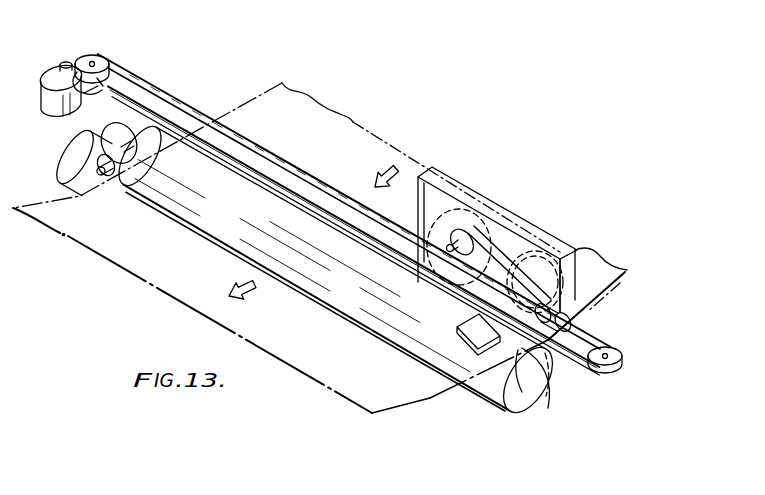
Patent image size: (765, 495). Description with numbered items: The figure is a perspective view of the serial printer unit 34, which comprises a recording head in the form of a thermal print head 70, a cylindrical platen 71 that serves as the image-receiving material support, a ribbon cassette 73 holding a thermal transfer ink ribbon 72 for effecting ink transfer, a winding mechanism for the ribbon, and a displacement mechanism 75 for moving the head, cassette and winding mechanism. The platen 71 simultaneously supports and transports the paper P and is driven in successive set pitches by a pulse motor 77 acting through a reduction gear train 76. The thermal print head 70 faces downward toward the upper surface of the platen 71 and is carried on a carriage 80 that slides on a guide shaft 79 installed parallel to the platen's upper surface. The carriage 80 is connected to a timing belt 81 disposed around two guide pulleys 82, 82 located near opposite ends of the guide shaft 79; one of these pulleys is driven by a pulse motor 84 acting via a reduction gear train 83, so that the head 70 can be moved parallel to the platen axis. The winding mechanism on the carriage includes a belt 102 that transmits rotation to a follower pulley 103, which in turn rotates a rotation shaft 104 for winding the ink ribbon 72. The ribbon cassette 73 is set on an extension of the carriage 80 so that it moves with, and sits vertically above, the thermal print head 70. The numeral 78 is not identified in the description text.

The paper P is at (400, 124).
The serial printer unit 34 is at (440, 153).
The thermal print head 70 is at (472, 333).
The cylindrical platen 71 is at (523, 398).
The thermal transfer ink ribbon 72 is at (410, 344).
The ribbon cassette 73 is at (592, 237).
The displacement mechanism 75 is at (101, 52).
The reduction gear train 76 is at (118, 132).
The pulse motor 77 is at (68, 158).
The guide groove 78 is at (430, 306).
The guide shaft 79 is at (578, 326).
The carriage 80 is at (527, 365).
The timing belt 81 is at (180, 102).
The guide pulleys 82 is at (112, 67).
The reduction gear train 83 is at (82, 60).
The pulse motor 84 is at (58, 108).
The belt 102 is at (512, 226).
The follower pulley 103 is at (470, 229).
The rotation shaft 104 is at (461, 240).